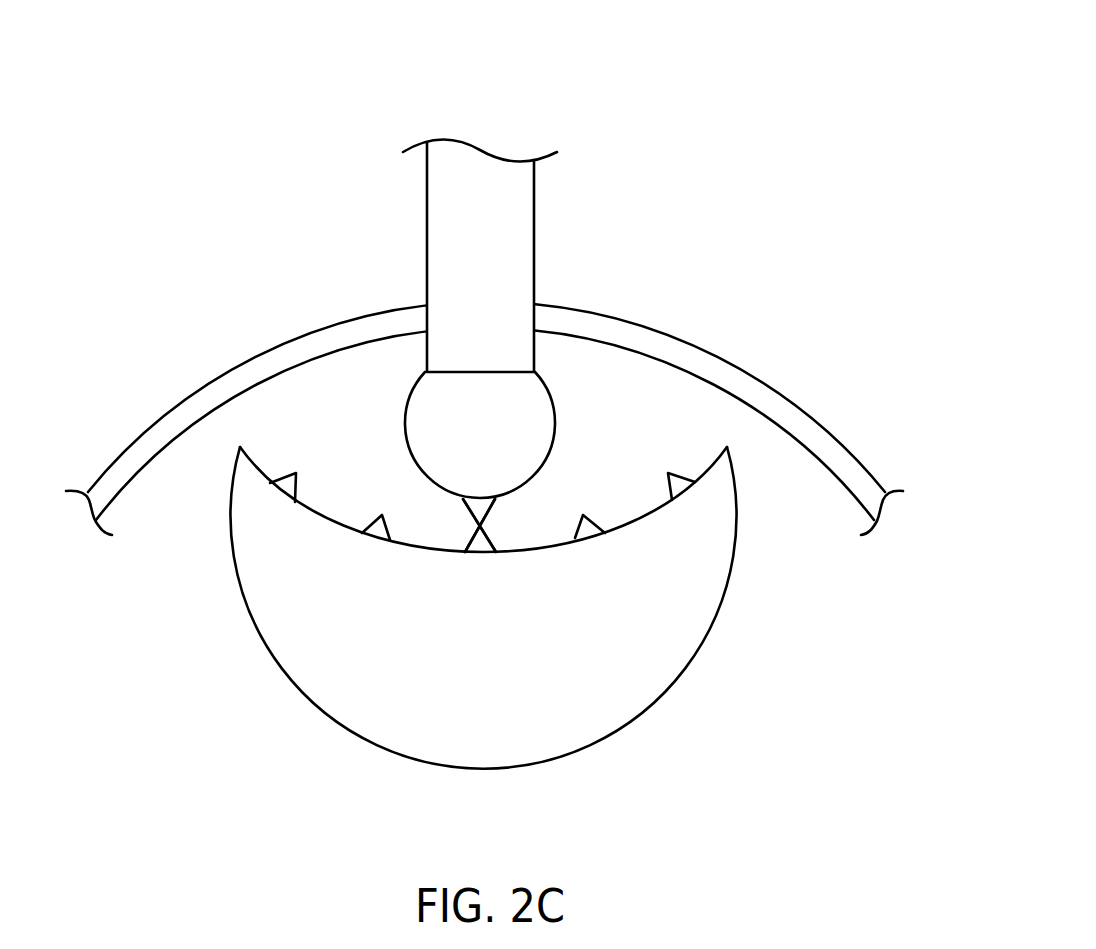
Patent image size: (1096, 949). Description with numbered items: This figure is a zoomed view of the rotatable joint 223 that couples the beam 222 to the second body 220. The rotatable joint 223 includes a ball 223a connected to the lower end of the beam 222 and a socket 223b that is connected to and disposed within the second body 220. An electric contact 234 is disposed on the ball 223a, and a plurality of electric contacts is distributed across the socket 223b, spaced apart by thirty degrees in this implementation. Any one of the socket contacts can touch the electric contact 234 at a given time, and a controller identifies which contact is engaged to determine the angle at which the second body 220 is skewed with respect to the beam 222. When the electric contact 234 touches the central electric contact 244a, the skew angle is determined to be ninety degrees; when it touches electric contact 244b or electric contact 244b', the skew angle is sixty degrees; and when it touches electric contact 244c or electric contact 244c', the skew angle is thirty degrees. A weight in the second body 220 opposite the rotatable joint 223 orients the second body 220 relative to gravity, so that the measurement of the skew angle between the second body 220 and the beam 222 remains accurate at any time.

The second body 220 is at (700, 352).
The beam 222 is at (535, 221).
The rotatable joint 223 is at (240, 282).
The ball 223a is at (555, 410).
The socket 223b is at (655, 702).
The electric contact 234 is at (472, 514).
The electric contact 244a is at (487, 530).
The electric contact 244b is at (615, 490).
The electric contact 244b' is at (359, 492).
The electric contact 244c is at (709, 457).
The electric contact 244c' is at (331, 448).